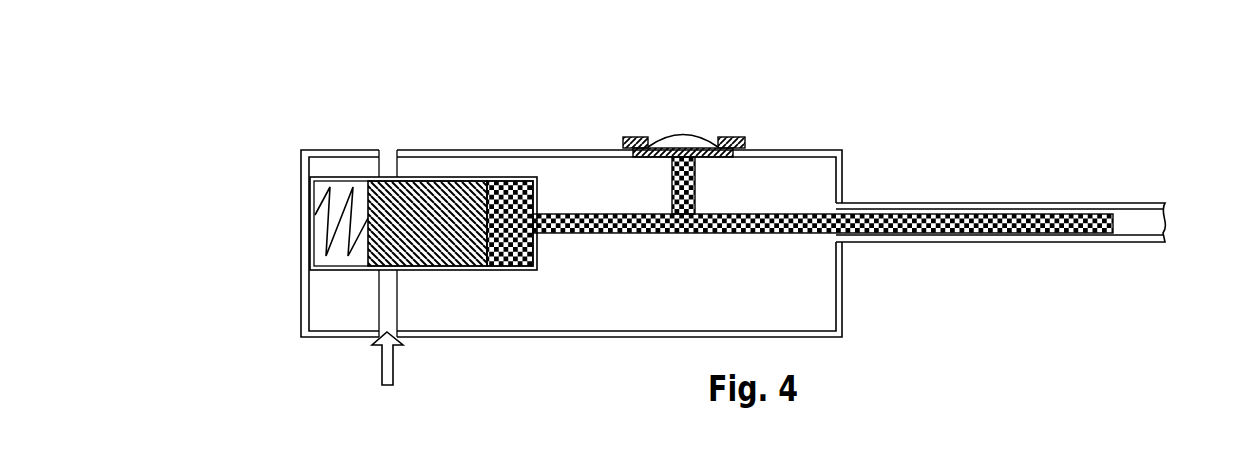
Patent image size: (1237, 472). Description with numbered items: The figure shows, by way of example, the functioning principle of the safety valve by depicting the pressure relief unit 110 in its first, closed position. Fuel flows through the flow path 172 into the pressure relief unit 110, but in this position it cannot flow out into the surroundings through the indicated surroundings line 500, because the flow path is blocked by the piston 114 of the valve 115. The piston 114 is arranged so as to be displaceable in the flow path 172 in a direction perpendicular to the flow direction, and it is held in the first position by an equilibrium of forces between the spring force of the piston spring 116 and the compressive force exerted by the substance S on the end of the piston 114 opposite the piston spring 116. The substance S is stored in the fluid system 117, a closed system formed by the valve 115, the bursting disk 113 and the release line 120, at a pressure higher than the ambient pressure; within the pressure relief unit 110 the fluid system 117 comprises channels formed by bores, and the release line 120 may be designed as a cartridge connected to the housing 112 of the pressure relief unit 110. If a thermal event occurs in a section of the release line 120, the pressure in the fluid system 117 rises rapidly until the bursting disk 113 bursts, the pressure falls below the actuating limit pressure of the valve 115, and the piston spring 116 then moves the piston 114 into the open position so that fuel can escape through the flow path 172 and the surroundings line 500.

The pressure relief unit 110 is at (817, 355).
The housing 112 is at (799, 150).
The bursting disk 113 is at (700, 135).
The piston 114 is at (434, 226).
The valve 115 is at (498, 170).
The piston spring 116 is at (323, 206).
The fluid system 117 is at (720, 237).
The release line 120 is at (1115, 200).
The surroundings line 500 is at (388, 157).
The flow path 172 is at (388, 367).